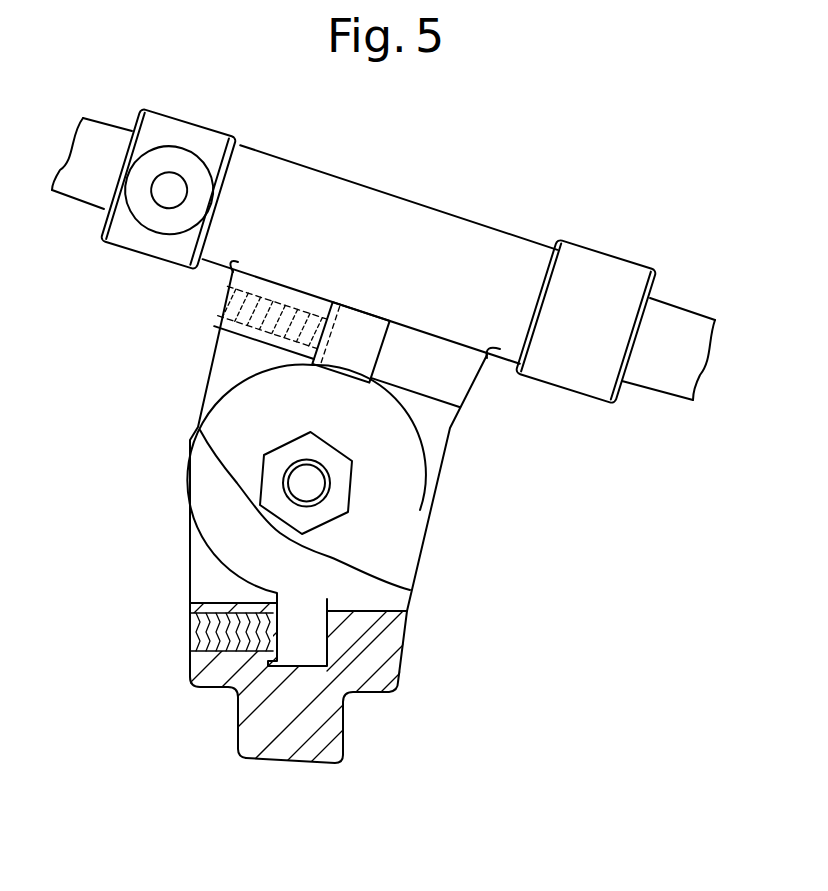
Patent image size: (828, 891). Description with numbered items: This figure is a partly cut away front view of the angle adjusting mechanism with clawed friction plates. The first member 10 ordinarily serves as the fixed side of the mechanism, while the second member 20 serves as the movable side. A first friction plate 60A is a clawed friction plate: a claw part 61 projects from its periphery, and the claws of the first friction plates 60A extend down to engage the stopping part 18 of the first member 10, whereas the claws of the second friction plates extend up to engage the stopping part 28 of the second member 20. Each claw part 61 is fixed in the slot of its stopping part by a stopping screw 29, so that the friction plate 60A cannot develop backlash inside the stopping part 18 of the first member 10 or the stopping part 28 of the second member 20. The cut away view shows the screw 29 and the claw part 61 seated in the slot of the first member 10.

The first member 10 is at (295, 695).
The stopping part 18 is at (238, 697).
The second member 20 is at (461, 252).
The stopping part 28 is at (357, 313).
The stopping screw 29 is at (230, 306).
The first friction plate 60A is at (225, 517).
The claw part 61 is at (363, 353).